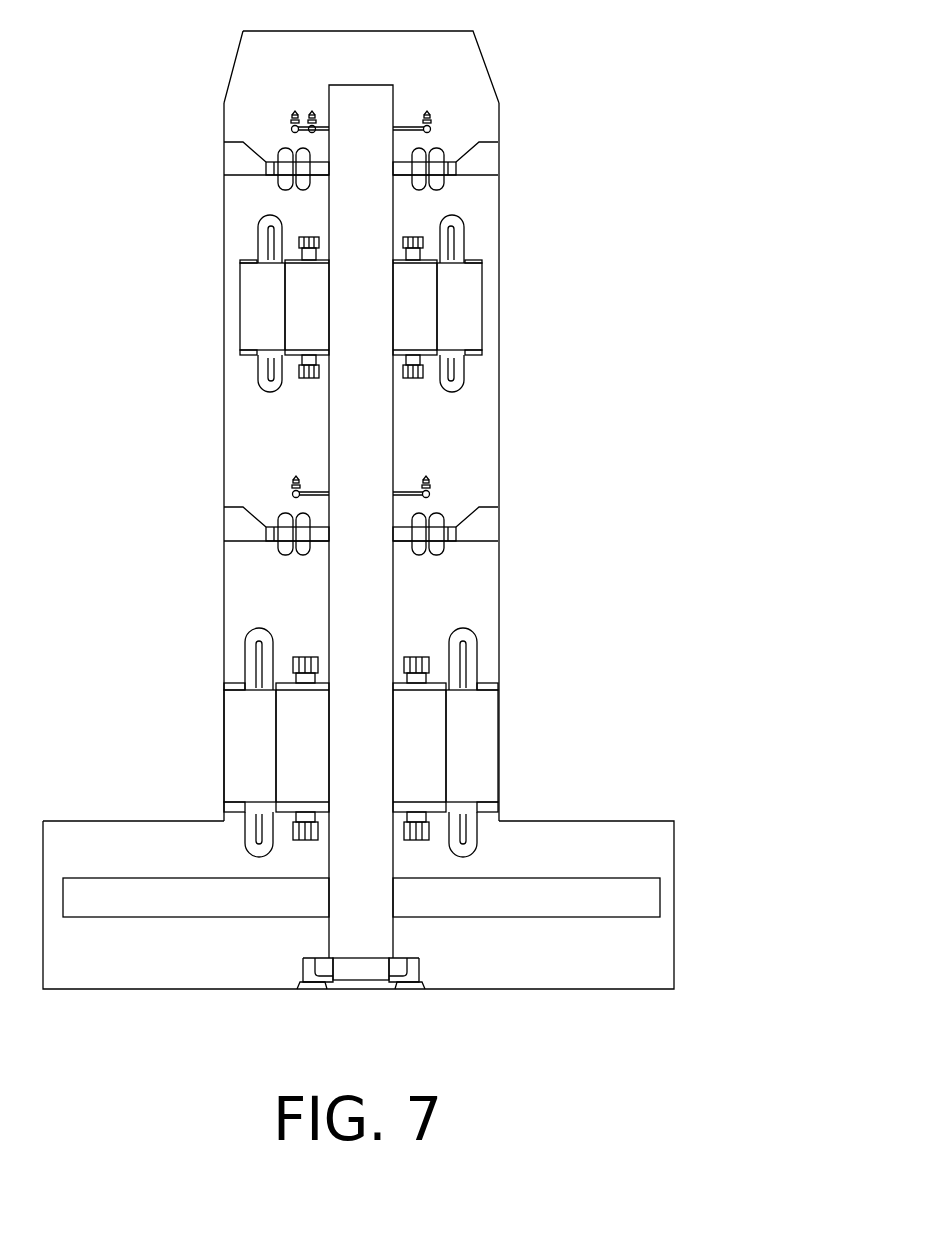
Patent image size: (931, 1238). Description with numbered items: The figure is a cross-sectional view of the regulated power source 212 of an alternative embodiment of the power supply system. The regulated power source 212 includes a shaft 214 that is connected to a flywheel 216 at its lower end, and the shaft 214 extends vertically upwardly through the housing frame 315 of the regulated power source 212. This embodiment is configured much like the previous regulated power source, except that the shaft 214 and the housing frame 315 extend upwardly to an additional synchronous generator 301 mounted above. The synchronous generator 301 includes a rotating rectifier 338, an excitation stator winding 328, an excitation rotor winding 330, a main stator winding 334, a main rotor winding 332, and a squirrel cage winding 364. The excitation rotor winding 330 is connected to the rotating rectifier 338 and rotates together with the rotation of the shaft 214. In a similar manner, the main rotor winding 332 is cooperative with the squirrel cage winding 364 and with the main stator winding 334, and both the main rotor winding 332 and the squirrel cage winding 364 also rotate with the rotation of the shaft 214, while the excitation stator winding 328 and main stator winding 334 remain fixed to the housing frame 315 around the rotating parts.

The synchronous generator 301 is at (612, 150).
The housing frame 315 is at (499, 247).
The regulated power source 212 is at (604, 394).
The shaft 214 is at (363, 610).
The flywheel 216 is at (660, 889).
The excitation stator winding 328 is at (281, 148).
The excitation rotor winding 330 is at (419, 148).
The rotating rectifier 338 is at (415, 112).
The squirrel cage winding 364 is at (428, 303).
The main rotor winding 332 is at (412, 378).
The main stator winding 334 is at (460, 215).